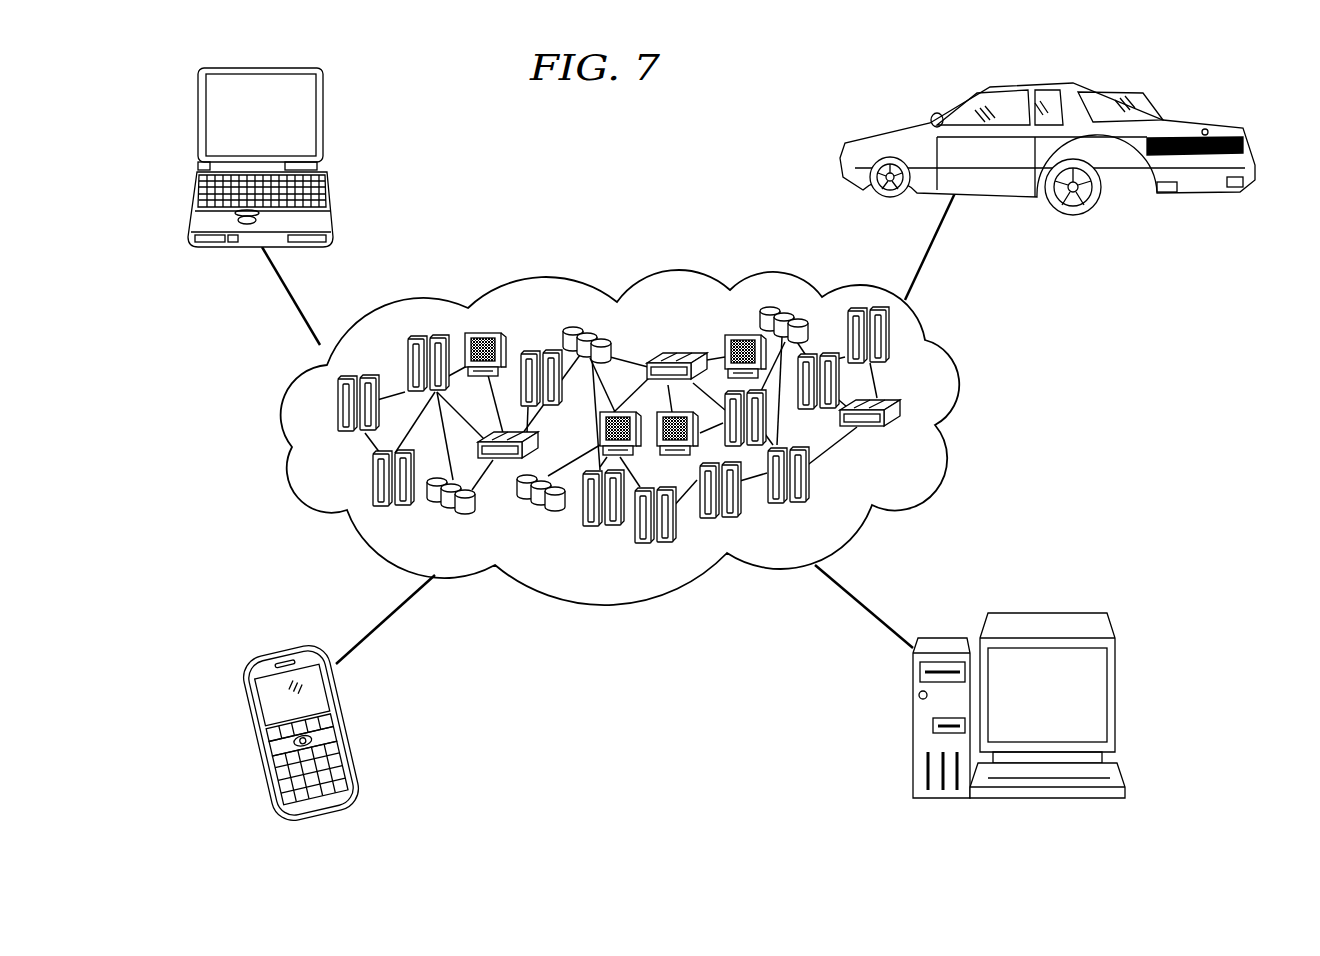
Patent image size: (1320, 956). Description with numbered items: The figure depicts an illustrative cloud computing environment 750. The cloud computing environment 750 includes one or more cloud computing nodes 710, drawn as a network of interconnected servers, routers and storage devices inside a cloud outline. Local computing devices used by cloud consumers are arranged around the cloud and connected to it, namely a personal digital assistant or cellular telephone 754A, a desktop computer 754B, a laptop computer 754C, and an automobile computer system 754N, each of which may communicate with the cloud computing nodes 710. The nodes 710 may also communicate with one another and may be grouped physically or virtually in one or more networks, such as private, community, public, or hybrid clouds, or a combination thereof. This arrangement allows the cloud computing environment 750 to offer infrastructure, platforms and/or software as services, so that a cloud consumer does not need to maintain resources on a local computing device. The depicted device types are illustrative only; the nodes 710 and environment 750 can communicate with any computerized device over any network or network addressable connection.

The cloud computing environment 750 is at (948, 352).
The cloud computing nodes 710 is at (906, 438).
The laptop computer 754C is at (198, 107).
The automobile computer system 754N is at (1222, 124).
The personal digital assistant (PDA) or cellular telephone 754A is at (242, 722).
The desktop computer 754B is at (1048, 613).